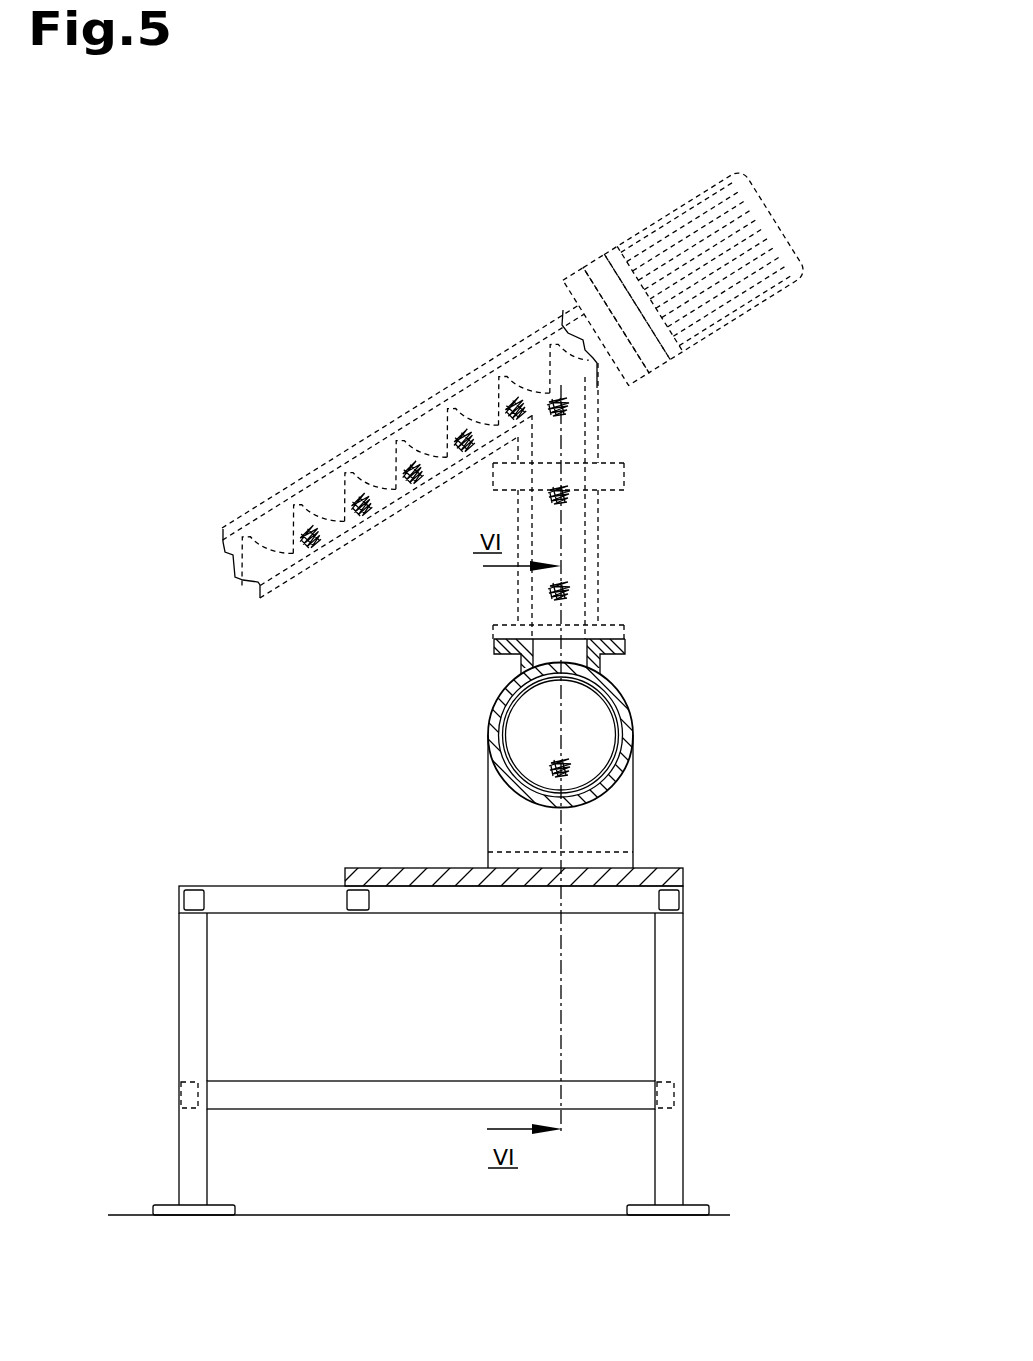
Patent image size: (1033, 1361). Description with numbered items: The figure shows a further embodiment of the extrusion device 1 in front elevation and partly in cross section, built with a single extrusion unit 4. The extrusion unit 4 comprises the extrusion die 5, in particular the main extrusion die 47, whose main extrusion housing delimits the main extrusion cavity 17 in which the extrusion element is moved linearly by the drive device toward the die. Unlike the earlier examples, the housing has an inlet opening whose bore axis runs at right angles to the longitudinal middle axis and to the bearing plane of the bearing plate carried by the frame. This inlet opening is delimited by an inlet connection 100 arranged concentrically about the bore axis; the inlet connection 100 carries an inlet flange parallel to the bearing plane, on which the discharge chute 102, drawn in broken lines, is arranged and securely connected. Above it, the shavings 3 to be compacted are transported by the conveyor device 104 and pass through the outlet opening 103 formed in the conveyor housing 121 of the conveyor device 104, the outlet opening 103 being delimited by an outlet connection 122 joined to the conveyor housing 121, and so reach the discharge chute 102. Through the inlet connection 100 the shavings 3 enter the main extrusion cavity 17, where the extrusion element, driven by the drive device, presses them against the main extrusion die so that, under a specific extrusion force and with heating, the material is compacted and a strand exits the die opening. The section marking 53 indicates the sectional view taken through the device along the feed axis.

The extrusion device 1 is at (565, 723).
The shavings 3 is at (318, 542).
The extrusion unit 4 is at (668, 762).
The extrusion die 5 is at (665, 727).
The main extrusion cavity 17 is at (537, 725).
The main extrusion die 47 is at (458, 760).
The feed axis 53 is at (571, 548).
The inlet connection 100 is at (630, 665).
The discharge chute 102 is at (593, 567).
The outlet opening 103 is at (546, 374).
The conveyor device 104 is at (262, 483).
The conveyor housing 121 is at (310, 462).
The outlet connection 122 is at (622, 432).